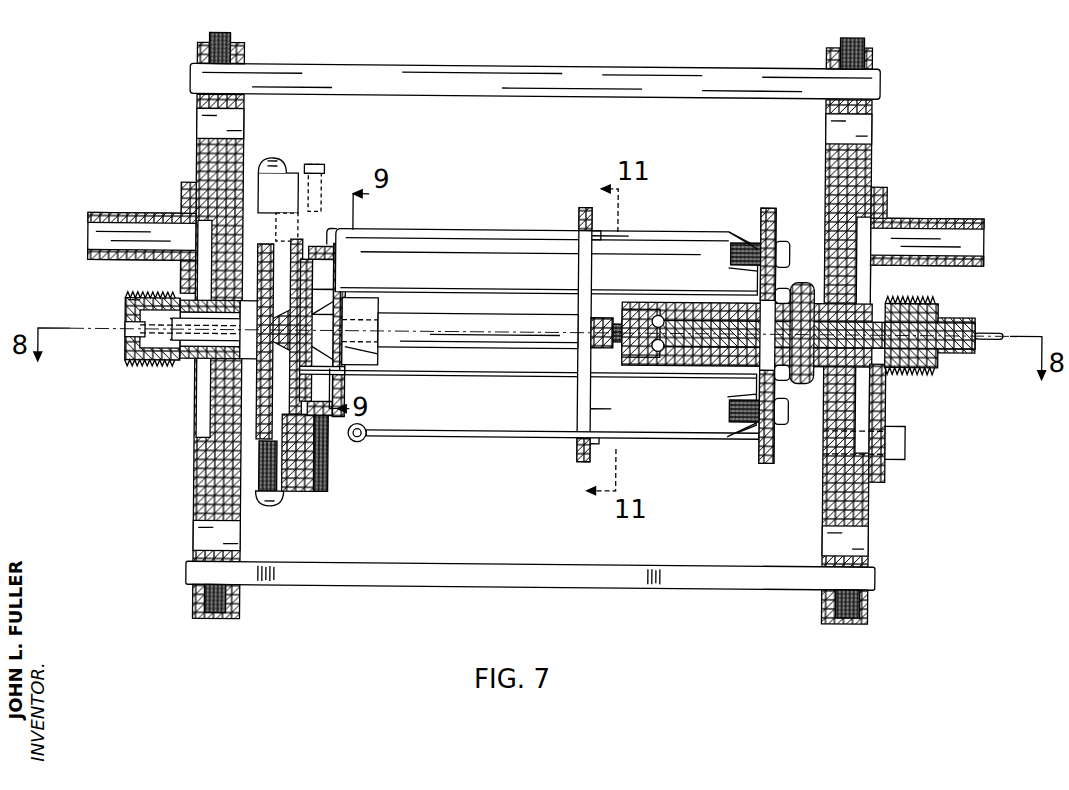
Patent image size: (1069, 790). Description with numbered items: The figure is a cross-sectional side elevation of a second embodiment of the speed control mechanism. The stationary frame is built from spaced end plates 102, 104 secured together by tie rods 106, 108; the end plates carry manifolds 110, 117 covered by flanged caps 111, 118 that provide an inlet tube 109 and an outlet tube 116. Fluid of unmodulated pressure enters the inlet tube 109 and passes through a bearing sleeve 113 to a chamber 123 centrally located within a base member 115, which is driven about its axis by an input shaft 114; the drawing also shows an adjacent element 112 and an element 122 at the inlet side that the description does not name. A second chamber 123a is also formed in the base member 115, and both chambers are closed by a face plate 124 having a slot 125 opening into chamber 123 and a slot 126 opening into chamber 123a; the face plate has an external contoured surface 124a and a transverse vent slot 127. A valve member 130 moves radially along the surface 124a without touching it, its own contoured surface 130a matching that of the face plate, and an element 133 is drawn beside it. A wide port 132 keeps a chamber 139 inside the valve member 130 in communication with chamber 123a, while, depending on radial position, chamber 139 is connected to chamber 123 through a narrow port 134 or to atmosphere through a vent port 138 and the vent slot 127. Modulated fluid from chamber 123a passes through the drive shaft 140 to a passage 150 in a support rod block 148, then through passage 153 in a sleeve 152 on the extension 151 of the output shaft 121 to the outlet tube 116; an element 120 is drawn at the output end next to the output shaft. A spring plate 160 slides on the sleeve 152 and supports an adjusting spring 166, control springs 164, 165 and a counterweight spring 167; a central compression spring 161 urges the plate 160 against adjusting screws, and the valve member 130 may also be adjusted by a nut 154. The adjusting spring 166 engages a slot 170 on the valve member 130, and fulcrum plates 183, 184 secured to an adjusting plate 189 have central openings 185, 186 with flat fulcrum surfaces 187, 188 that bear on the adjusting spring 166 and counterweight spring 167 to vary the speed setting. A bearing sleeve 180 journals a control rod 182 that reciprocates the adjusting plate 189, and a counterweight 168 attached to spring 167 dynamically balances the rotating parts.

The end plate 102 is at (232, 42).
The end plate 104 is at (875, 57).
The tie rod 106 is at (325, 63).
The tie rod 108 is at (495, 585).
The inlet tube 109 is at (95, 213).
The manifold 110 is at (185, 272).
The flanged cap 111 is at (185, 195).
The nozzle 112 is at (130, 300).
The bearing sleeve 113 is at (135, 362).
The input shaft 114 is at (140, 335).
The base member 115 is at (287, 190).
The outlet tube 116 is at (985, 222).
The manifold 117 is at (865, 288).
The flanged cap 118 is at (888, 277).
The threaded fitting 120 is at (925, 364).
The output shaft 121 is at (960, 311).
The tube 122 is at (210, 340).
The chamber 123 is at (278, 302).
The second chamber 123a is at (275, 250).
The face plate 124 is at (290, 432).
The external contoured surface 124a is at (355, 290).
The slot 125 is at (402, 329).
The slot 126 is at (368, 300).
The vent slot 127 is at (285, 362).
The valve member 130 is at (318, 242).
The contoured surface 130a is at (314, 295).
The wide port 132 is at (348, 318).
The plate 133 is at (345, 252).
The narrow port 134 is at (350, 345).
The vent port 138 is at (330, 378).
The chamber 139 is at (345, 270).
The drive shaft 140 is at (538, 311).
The support rod block 148 is at (690, 362).
The passage 150 is at (633, 352).
The extension 151 is at (805, 380).
The sleeve 152 is at (785, 288).
The passage 153 is at (760, 325).
The nut 154 is at (768, 460).
The spring plate 160 is at (765, 205).
The central compression spring 161 is at (700, 316).
The control spring 164 is at (515, 290).
The control spring 165 is at (525, 369).
The adjusting spring 166 is at (480, 227).
The counterweight spring 167 is at (535, 428).
The counterweight 168 is at (368, 431).
The slot 170 is at (331, 228).
The bearing sleeve 180 is at (658, 348).
The control rod 182 is at (626, 304).
The fulcrum plate 183 is at (586, 206).
The fulcrum plate 184 is at (578, 452).
The central opening 185 is at (578, 228).
The central opening 186 is at (592, 408).
The flat fulcrum surface 187 is at (600, 232).
The lower flat surface 188 is at (591, 440).
The adjusting plate 189 is at (598, 316).